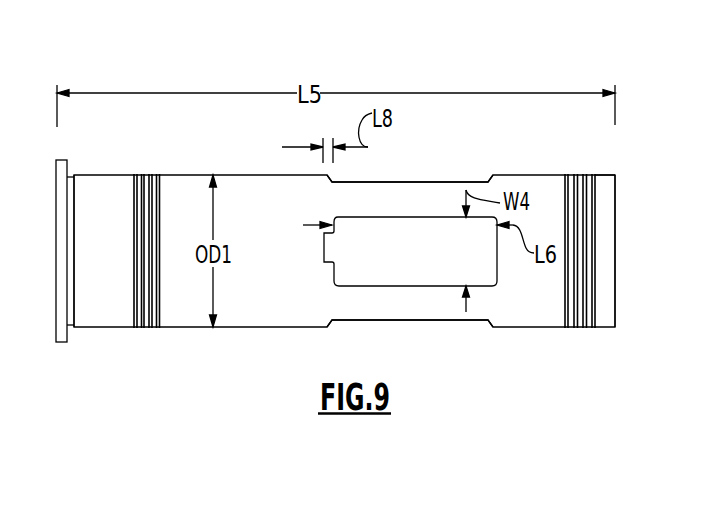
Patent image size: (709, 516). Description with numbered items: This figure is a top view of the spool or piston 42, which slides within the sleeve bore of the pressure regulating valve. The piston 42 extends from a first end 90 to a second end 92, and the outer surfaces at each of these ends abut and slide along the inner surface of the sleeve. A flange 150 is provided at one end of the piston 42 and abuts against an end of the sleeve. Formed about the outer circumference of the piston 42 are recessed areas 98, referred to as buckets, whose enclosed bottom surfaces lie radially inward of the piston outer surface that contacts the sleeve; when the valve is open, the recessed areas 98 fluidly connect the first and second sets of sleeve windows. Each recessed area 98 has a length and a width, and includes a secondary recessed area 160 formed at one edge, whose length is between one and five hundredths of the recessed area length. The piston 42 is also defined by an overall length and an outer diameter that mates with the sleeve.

The piston 42 is at (507, 68).
The first end 90 is at (608, 192).
The second end 92 is at (87, 315).
The recessed areas 98 is at (432, 232).
The flange 150 is at (67, 166).
The secondary recessed area 160 is at (327, 258).